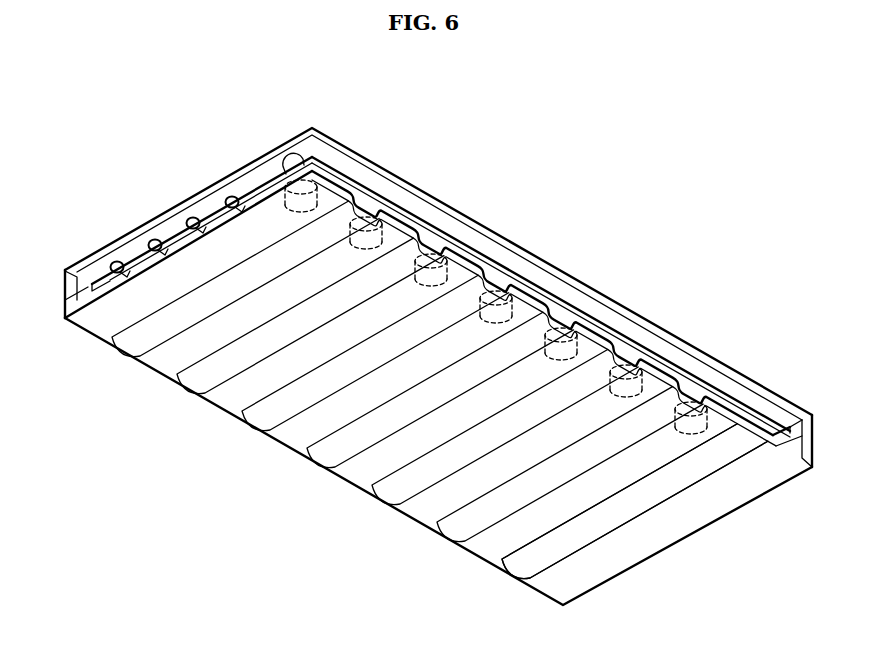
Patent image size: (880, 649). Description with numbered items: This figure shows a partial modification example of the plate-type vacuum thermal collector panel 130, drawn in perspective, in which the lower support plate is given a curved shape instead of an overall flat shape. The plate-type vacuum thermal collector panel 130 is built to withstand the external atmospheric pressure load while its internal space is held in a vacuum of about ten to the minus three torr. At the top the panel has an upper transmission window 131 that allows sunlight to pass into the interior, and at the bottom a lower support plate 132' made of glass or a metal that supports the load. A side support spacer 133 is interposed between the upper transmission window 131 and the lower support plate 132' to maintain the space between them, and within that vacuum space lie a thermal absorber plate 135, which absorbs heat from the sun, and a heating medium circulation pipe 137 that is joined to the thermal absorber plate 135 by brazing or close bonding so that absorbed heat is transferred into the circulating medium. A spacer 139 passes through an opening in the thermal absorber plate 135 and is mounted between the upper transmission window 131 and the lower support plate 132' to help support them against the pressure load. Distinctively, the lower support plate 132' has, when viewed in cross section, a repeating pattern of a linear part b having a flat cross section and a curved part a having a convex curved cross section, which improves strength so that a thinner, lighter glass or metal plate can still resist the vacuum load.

The plate-type vacuum thermal collector panel 130 is at (250, 481).
The upper transmission window 131 is at (407, 183).
The lower support plate 132' is at (440, 390).
The side support spacer 133 is at (70, 290).
The thermal absorber plate 135 is at (267, 180).
The heating medium circulation pipe 137 is at (232, 200).
The spacer 139 is at (298, 160).
The curved part a is at (741, 447).
The linear part b is at (684, 447).